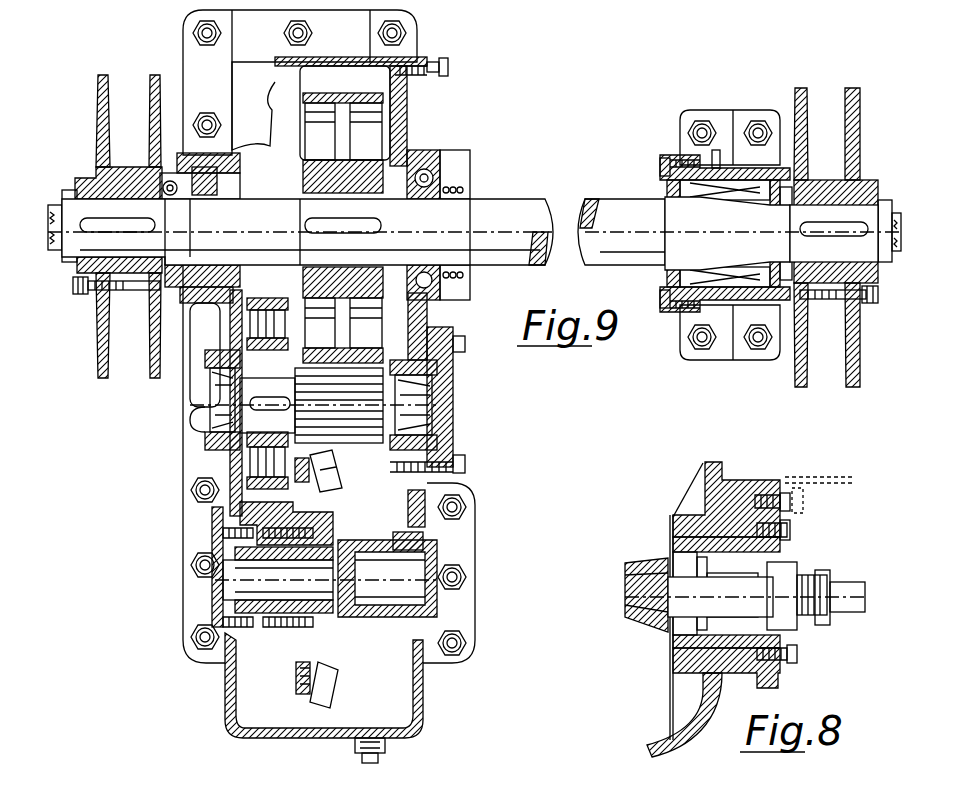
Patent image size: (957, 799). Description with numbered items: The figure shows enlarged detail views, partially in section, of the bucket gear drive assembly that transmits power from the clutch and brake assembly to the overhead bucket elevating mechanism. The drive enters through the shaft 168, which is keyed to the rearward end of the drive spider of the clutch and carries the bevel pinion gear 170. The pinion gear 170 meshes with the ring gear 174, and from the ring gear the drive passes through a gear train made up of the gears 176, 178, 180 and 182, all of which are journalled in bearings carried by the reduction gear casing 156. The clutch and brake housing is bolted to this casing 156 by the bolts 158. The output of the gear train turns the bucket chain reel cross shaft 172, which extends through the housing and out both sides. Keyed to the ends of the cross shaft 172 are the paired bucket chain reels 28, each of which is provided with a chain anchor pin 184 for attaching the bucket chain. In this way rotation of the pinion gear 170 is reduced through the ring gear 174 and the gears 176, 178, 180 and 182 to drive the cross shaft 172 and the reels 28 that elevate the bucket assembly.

In FIG. 9, the bucket reel 28 is at (98, 122).
In FIG. 9, the bucket chain reel cross shaft 172 is at (617, 200).
In FIG. 9, the gear 182 is at (303, 284).
In FIG. 9, the gear 178 is at (250, 457).
In FIG. 9, the gear 180 is at (363, 445).
In FIG. 9, the gear 176 is at (262, 655).
In FIG. 9, the ring gear 174 is at (340, 683).
In FIG. 9, the chain anchor pin 184 is at (116, 293).
In FIG. 8, the reduction gear casing 156 is at (737, 492).
In FIG. 8, the bolt 158 is at (813, 510).
In FIG. 8, the bevel pinion gear 170 is at (623, 578).
In FIG. 8, the shaft 168 is at (884, 593).